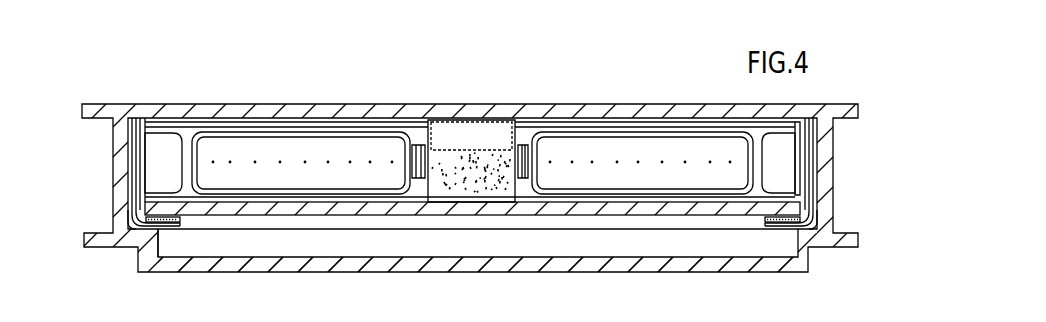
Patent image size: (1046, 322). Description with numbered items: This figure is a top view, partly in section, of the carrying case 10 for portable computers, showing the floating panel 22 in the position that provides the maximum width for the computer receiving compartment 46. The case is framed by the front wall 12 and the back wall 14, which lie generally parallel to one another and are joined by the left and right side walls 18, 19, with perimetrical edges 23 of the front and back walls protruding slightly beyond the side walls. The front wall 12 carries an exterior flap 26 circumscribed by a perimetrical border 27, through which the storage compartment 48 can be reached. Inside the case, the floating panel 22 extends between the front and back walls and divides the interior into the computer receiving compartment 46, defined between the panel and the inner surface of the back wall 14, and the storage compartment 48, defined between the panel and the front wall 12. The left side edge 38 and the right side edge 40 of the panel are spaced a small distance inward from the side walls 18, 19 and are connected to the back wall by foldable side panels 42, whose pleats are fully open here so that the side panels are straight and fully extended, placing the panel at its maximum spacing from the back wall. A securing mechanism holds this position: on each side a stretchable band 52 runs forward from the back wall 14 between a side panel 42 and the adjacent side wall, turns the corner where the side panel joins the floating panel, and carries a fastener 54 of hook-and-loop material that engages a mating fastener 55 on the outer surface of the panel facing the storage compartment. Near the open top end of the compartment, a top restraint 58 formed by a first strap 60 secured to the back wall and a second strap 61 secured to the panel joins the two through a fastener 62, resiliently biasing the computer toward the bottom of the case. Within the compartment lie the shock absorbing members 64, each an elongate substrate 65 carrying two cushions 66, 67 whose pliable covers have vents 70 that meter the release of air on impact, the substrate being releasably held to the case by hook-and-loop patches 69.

The carrying case 10 is at (141, 83).
The front wall 12 is at (97, 250).
The back wall 14 is at (297, 103).
The left side wall 18 is at (111, 141).
The right side wall 19 is at (843, 183).
The floating panel 22 is at (545, 234).
The perimetrical edges 23 is at (92, 110).
The exterior flap 26 is at (428, 274).
The perimetrical border 27 is at (822, 249).
The left side edge 38 is at (140, 211).
The right side edge 40 is at (816, 218).
The side panels 42 is at (128, 133).
The computer receiving compartment 46 is at (577, 148).
The storage compartment 48 is at (216, 249).
The band 52 is at (133, 181).
The fastener 54 is at (158, 228).
The fastener 55 is at (213, 217).
The top restraint 58 is at (525, 124).
The first strap 60 is at (500, 133).
The second strap 61 is at (437, 200).
The fastener 62 is at (468, 163).
The shock absorbing members 64 is at (312, 122).
The elongate substrate 65 is at (417, 131).
The cushion 66 is at (168, 143).
The cushion 67 is at (248, 146).
The patches 69 is at (143, 156).
The vents 70 is at (350, 160).